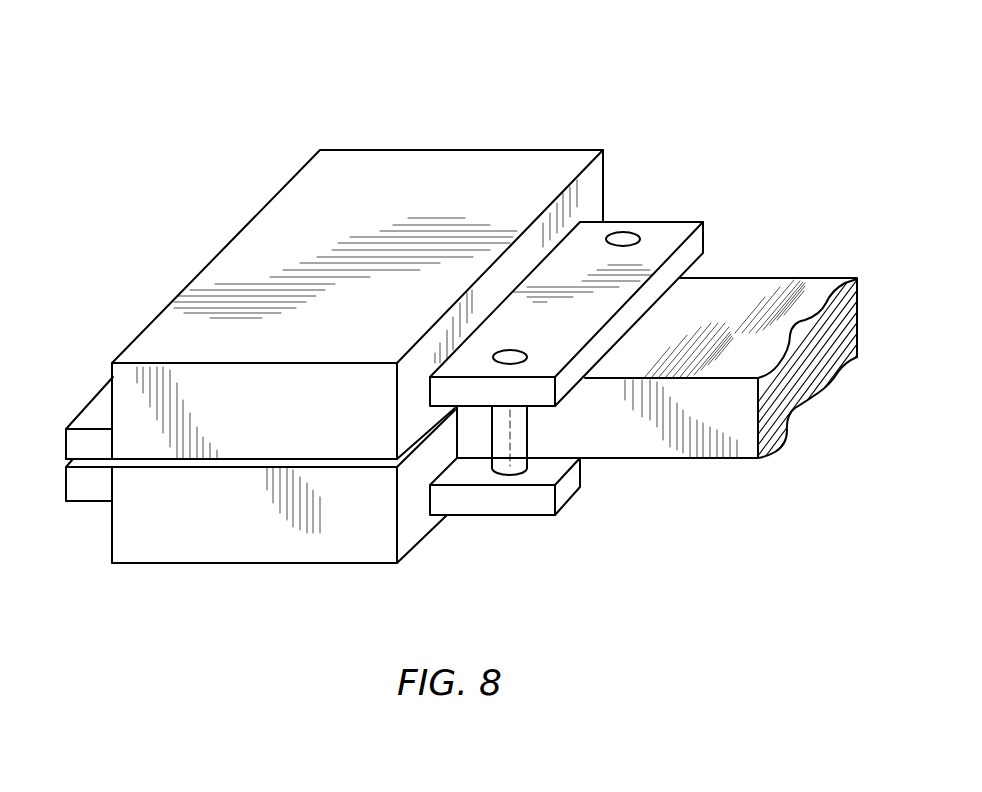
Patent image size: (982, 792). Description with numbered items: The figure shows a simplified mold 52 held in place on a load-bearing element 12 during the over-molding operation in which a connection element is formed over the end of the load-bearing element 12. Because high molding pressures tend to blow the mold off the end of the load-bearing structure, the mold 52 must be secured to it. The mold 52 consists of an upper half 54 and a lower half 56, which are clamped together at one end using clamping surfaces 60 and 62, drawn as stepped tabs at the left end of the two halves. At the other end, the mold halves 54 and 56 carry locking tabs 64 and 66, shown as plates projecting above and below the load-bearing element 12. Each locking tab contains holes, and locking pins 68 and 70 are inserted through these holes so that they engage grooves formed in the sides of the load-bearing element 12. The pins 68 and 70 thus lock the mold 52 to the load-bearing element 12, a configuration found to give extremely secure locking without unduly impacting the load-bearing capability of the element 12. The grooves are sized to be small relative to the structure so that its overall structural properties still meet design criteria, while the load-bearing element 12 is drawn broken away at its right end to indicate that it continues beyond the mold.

The load-bearing element 12 is at (753, 290).
The simplified mold 52 is at (491, 118).
The upper half 54 is at (255, 257).
The lower half 56 is at (185, 548).
The clamping surface 60 is at (90, 422).
The clamping surface 62 is at (88, 500).
The locking tab 64 is at (663, 237).
The locking tab 66 is at (572, 483).
The locking pin 68 is at (622, 233).
The locking pin 70 is at (508, 355).